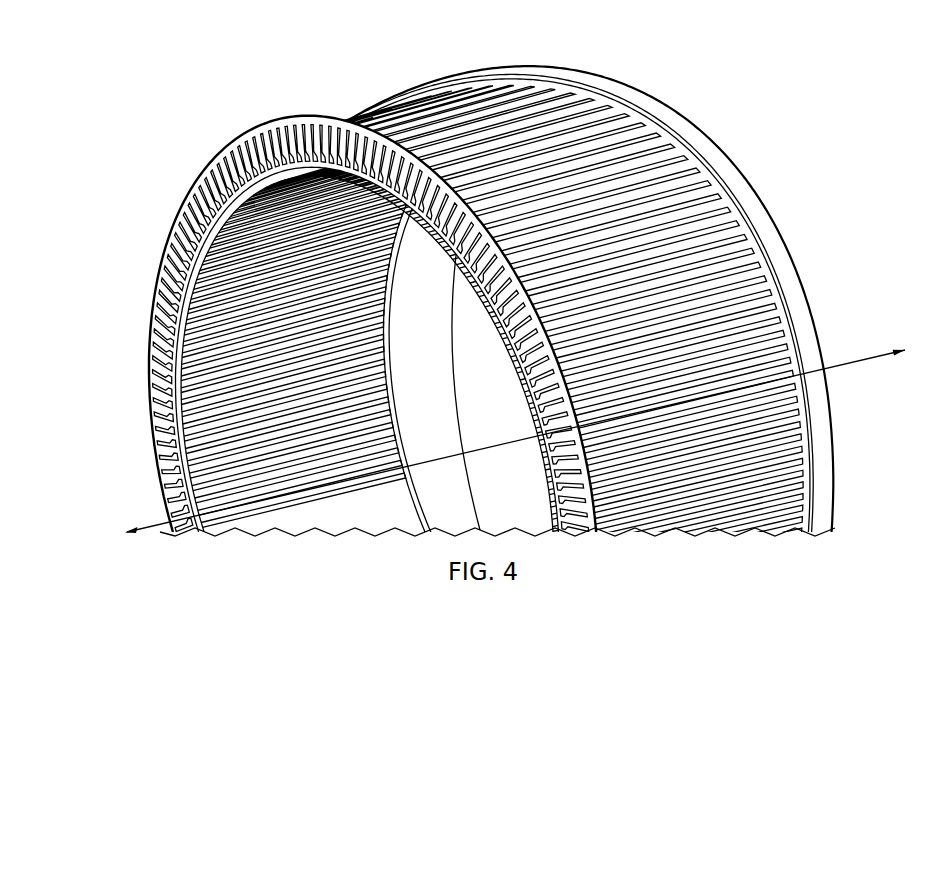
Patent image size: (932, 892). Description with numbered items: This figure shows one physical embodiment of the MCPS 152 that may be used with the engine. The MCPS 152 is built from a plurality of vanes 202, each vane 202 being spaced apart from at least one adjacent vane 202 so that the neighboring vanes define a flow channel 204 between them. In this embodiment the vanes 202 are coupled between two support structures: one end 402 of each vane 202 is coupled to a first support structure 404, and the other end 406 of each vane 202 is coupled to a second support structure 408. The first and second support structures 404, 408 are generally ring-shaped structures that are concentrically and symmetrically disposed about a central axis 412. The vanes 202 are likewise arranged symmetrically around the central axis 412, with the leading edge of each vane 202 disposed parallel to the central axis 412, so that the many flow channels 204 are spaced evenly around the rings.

The MCPS 152 is at (314, 71).
The vane 202 is at (442, 79).
The flow channel 204 is at (705, 211).
The one end 402 is at (594, 88).
The first support structure 404 is at (568, 67).
The other end 406 is at (400, 141).
The second support structure 408 is at (276, 126).
The central axis 412 is at (512, 441).